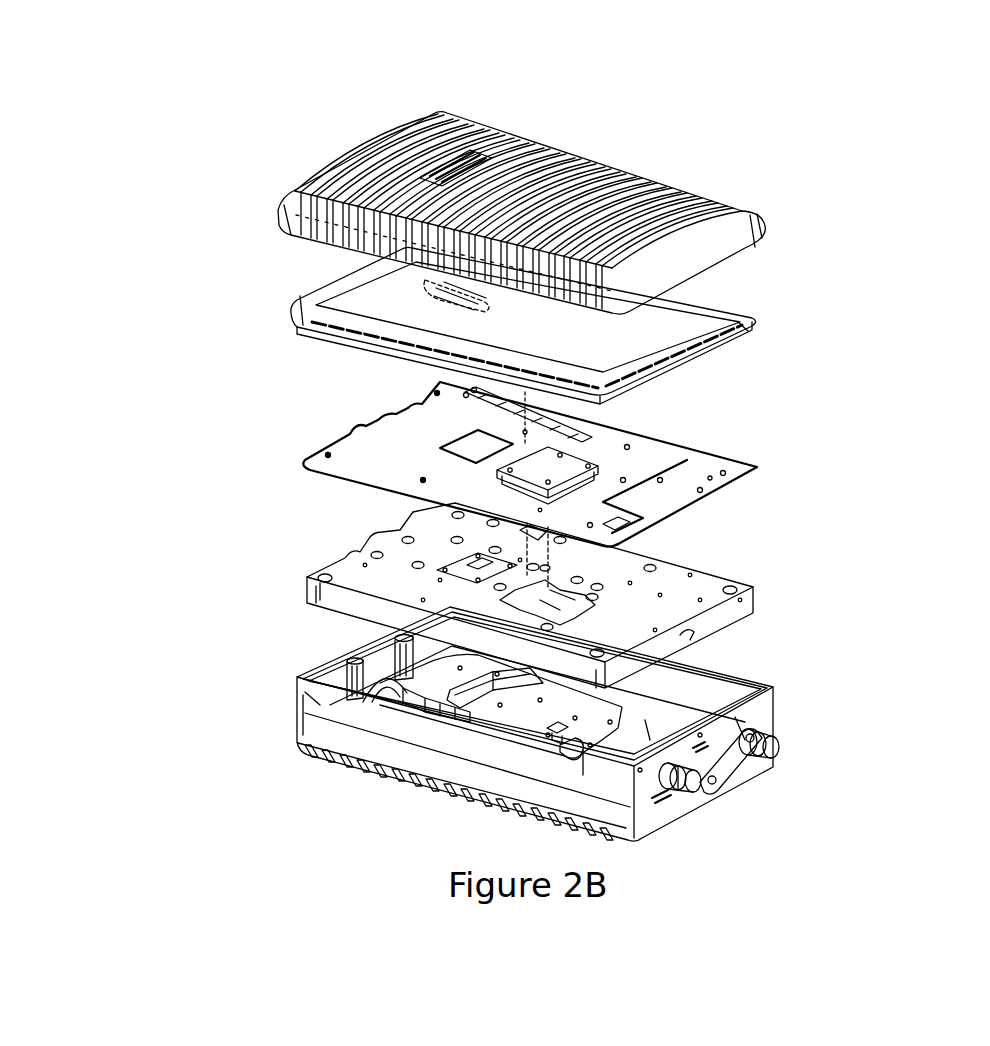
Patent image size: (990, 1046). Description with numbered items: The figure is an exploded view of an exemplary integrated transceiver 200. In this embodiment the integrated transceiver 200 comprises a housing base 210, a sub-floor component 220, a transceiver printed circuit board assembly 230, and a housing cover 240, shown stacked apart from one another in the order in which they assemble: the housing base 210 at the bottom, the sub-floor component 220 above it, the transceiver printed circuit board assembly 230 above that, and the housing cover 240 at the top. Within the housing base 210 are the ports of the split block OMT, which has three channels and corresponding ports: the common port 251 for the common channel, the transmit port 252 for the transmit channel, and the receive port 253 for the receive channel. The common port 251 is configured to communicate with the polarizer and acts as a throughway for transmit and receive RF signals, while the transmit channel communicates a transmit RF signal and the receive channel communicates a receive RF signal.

The integrated transceiver 200 is at (702, 72).
The housing cover 240 is at (759, 319).
The transceiver printed circuit board assembly 230 is at (757, 460).
The sub-floor component 220 is at (758, 582).
The housing base 210 is at (776, 683).
The receive port 253 is at (489, 678).
The common port 251 is at (391, 697).
The transmit port 252 is at (572, 755).